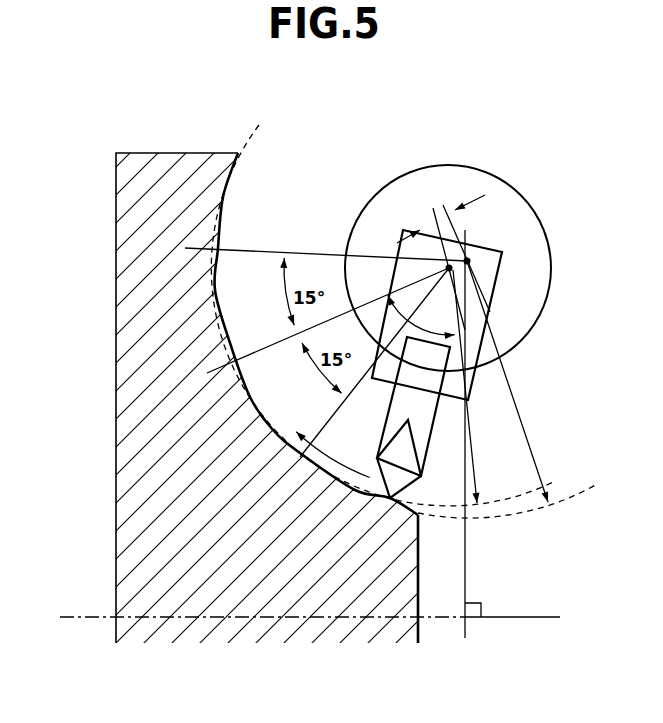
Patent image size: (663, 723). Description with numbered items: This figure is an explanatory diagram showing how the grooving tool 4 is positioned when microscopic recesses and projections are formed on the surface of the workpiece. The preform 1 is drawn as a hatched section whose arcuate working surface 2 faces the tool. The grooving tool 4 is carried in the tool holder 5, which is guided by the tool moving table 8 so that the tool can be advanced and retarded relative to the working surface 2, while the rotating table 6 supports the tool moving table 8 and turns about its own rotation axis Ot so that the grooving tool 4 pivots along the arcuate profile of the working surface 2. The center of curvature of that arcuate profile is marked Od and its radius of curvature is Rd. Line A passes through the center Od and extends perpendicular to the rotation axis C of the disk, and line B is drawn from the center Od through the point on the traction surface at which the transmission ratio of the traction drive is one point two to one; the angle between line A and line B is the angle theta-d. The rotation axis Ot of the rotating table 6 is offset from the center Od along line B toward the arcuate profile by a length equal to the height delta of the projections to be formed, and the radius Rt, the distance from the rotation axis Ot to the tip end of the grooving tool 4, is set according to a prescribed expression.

The preform 1 is at (116, 358).
The working surface 2 is at (219, 227).
The grooving tool 4 is at (382, 500).
The tool holder 5 is at (420, 414).
The rotating table 6 is at (537, 248).
The tool moving table 8 is at (490, 310).
The line A is at (466, 567).
The line B is at (267, 350).
The rotation axis C is at (506, 620).
The rotation axis of rotating table Ot is at (448, 268).
The center of curvature Od is at (467, 261).
The radius of curvature of locus of pivotal movement Rt is at (473, 465).
The radius of curvature Rd is at (540, 470).